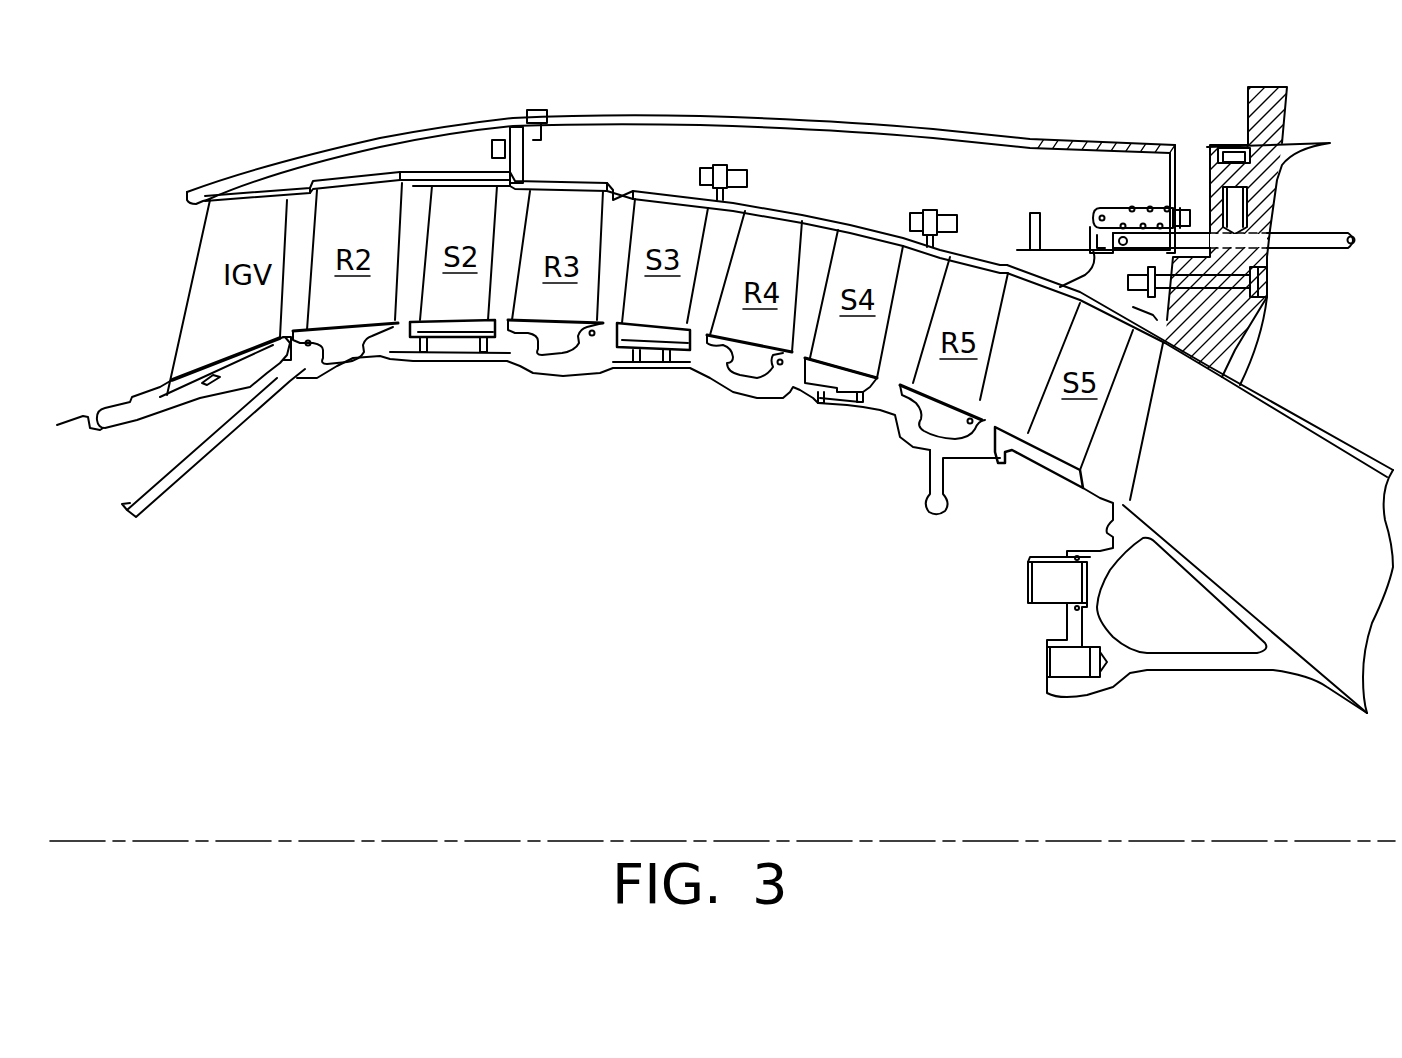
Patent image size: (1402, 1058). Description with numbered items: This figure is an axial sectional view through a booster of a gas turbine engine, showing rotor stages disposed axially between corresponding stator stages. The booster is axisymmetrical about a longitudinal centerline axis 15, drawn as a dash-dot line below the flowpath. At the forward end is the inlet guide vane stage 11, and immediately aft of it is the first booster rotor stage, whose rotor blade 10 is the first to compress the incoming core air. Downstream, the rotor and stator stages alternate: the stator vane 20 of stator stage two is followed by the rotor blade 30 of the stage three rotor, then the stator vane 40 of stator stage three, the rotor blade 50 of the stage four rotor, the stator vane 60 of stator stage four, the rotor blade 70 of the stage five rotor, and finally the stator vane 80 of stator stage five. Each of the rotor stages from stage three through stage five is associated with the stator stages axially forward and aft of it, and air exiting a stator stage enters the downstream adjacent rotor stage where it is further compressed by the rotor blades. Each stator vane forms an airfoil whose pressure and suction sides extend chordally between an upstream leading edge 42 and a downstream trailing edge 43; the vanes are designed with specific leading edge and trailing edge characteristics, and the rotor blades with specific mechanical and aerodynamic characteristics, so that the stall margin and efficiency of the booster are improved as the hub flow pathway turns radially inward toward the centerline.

The stage 2 rotor blade 10 is at (353, 317).
The inlet guide vane stage 11 is at (223, 318).
The longitudinal centerline axis 15 is at (550, 841).
The stator stage 2 stator vane 20 is at (457, 310).
The stage 3 rotor blade 30 is at (563, 312).
The stator vane 40 is at (663, 323).
The leading edge 42 is at (433, 224).
The trailing edge 43 is at (493, 260).
The stage 4 rotor blade 50 is at (753, 333).
The stator stage 4 stator vane 60 is at (858, 353).
The stage 5 rotor blade 70 is at (957, 423).
The stator stage 5 stator vane 80 is at (1063, 425).